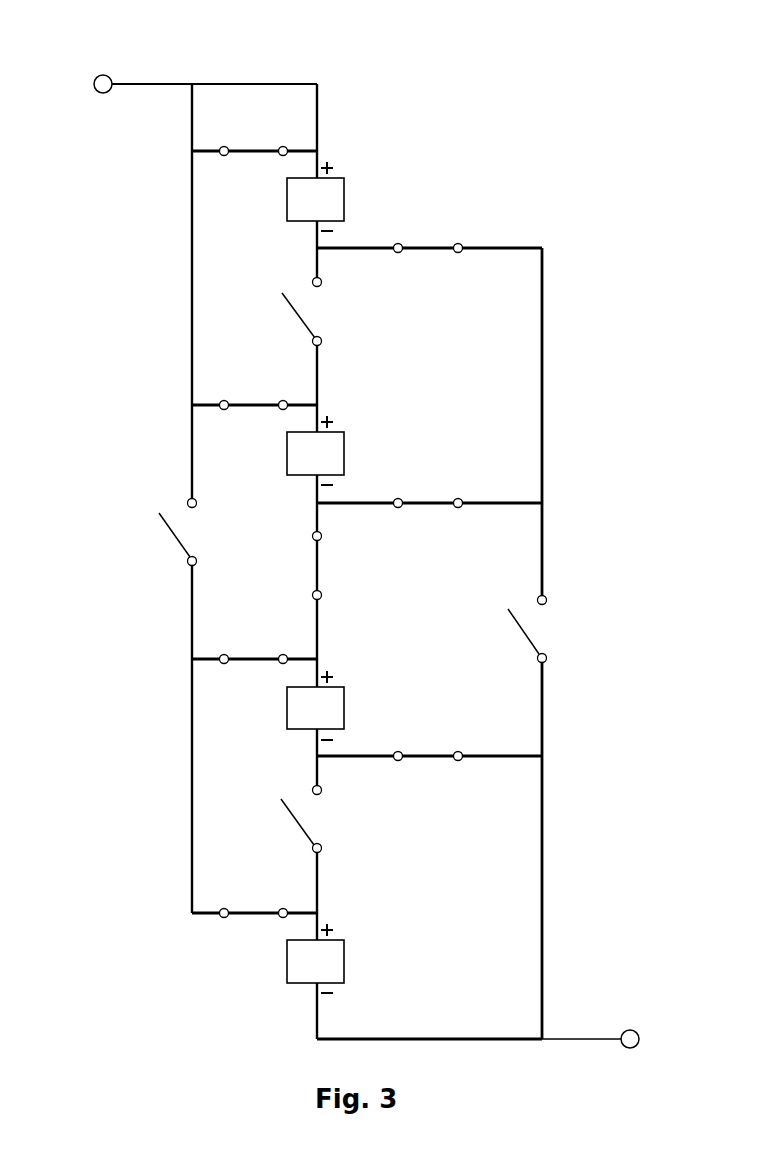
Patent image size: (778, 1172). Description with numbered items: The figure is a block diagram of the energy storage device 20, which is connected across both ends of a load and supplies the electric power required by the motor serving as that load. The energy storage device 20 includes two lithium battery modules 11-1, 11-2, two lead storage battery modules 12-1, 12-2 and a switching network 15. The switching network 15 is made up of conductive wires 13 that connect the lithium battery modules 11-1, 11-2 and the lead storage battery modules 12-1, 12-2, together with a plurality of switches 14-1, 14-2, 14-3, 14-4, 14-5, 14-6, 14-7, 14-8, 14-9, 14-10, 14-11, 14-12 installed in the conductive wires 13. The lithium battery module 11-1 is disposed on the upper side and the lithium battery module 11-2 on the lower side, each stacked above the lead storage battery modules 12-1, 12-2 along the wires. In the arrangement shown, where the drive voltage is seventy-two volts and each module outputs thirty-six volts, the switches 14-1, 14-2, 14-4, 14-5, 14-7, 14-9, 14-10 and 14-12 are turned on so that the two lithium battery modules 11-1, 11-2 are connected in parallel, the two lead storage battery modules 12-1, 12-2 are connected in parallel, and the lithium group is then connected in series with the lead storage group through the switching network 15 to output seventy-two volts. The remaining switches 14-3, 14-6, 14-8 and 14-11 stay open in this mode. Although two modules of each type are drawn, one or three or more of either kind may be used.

The energy storage device 20 is at (136, 50).
The lithium battery module 11-1 is at (345, 200).
The lithium battery module 11-2 is at (345, 454).
The lead storage battery module 12-1 is at (345, 709).
The lead storage battery module 12-2 is at (345, 962).
The conductive wires 13 is at (542, 375).
The switching network 15 is at (518, 248).
The switch 14-1 is at (253, 152).
The switch 14-2 is at (428, 248).
The switch 14-3 is at (300, 318).
The switch 14-4 is at (253, 406).
The switch 14-5 is at (428, 503).
The switch 14-6 is at (174, 536).
The switch 14-7 is at (317, 565).
The switch 14-8 is at (525, 632).
The switch 14-9 is at (253, 660).
The switch 14-10 is at (428, 756).
The switch 14-11 is at (301, 826).
The switch 14-12 is at (255, 914).